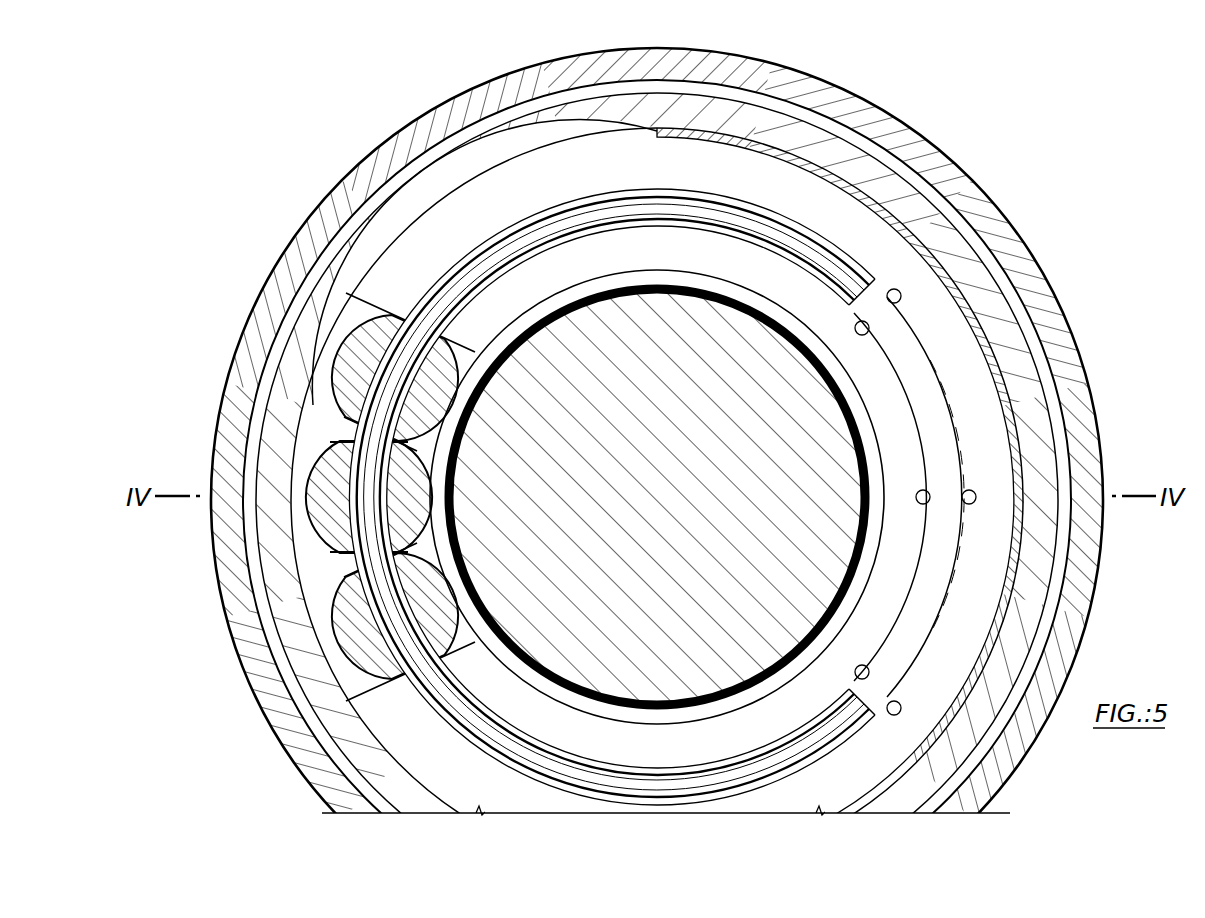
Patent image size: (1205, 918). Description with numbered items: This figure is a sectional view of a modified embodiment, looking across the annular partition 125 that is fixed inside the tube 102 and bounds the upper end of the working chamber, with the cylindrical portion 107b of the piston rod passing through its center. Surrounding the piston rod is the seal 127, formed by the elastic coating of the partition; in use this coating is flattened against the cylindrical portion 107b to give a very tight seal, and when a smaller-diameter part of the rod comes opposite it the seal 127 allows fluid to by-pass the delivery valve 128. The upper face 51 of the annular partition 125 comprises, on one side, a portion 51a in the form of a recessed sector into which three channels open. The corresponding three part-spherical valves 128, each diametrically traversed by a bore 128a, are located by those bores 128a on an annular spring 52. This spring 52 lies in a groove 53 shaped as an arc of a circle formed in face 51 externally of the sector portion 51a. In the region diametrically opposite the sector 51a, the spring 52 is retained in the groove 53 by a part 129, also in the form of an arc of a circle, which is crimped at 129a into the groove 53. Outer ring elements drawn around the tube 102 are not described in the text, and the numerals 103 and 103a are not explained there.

The upper face 51 is at (430, 228).
The sector portion 51a is at (318, 425).
The annular spring 52 is at (487, 257).
The groove 53 is at (843, 252).
The tube 102 is at (1035, 418).
The housing ring 103 is at (1042, 303).
The housing inner ring 103a is at (1038, 358).
The cylindrical portion of the piston rod 107b is at (802, 485).
The annular partition 125 is at (543, 300).
The seal 127 is at (722, 305).
The delivery valve 128 is at (460, 381).
The bore 128a is at (457, 440).
The retaining part 129 is at (938, 410).
The crimp 129a is at (895, 700).